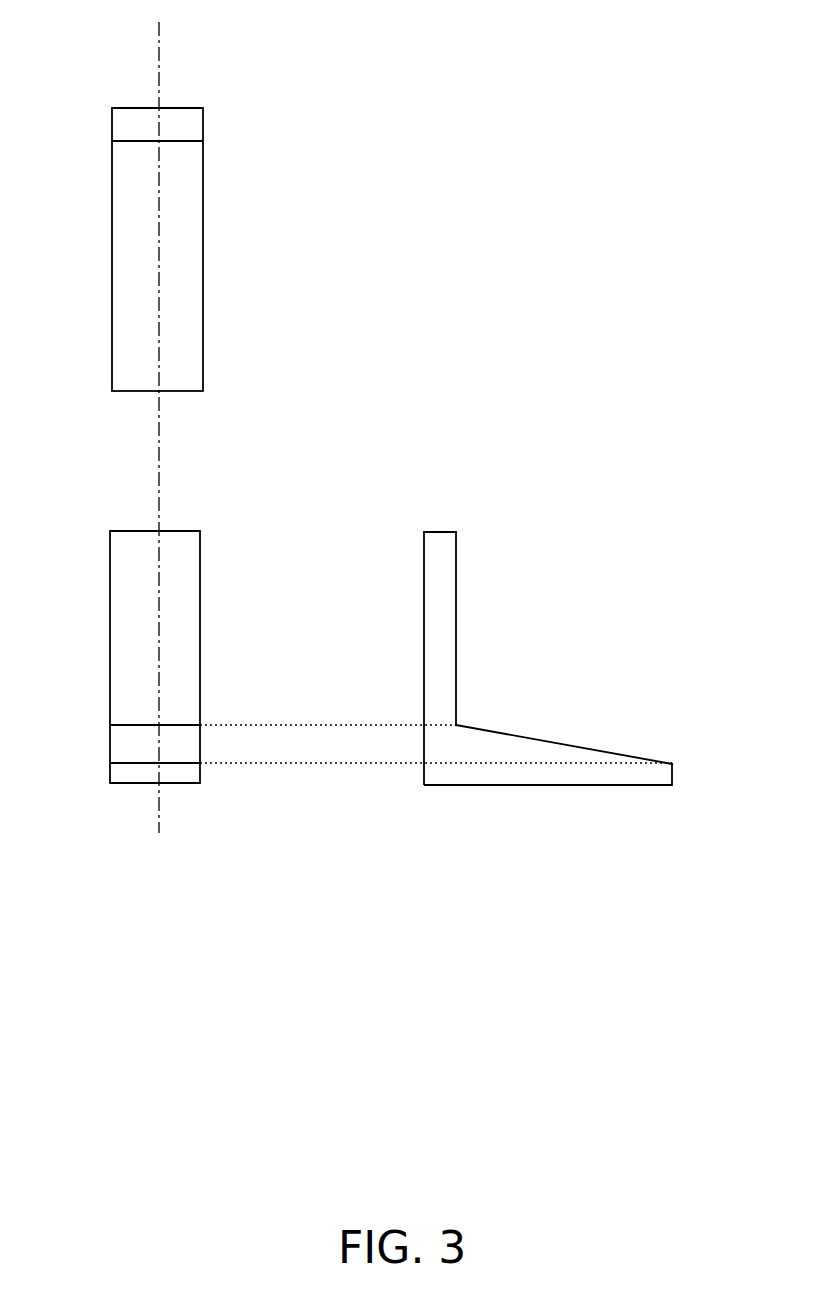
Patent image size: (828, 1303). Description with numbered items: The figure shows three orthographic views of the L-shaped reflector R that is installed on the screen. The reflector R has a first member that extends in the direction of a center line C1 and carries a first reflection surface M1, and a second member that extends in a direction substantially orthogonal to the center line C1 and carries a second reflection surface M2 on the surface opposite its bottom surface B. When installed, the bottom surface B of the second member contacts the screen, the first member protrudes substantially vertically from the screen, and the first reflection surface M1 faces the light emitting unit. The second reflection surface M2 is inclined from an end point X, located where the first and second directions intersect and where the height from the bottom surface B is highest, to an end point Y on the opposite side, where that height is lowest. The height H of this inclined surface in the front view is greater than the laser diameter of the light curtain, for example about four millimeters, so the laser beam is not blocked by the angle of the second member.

The center line C1 is at (160, 36).
The end point X is at (159, 140).
The end point Y is at (159, 391).
The L-shaped reflector R is at (203, 108).
The first reflection surface M1 is at (191, 584).
The second reflection surface M2 is at (192, 278).
The bottom surface B is at (130, 783).
The height of the inclined surface H is at (303, 727).